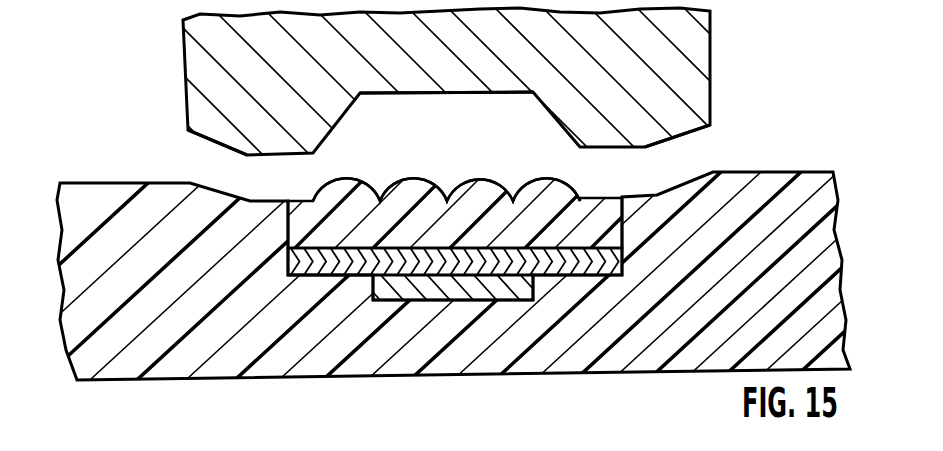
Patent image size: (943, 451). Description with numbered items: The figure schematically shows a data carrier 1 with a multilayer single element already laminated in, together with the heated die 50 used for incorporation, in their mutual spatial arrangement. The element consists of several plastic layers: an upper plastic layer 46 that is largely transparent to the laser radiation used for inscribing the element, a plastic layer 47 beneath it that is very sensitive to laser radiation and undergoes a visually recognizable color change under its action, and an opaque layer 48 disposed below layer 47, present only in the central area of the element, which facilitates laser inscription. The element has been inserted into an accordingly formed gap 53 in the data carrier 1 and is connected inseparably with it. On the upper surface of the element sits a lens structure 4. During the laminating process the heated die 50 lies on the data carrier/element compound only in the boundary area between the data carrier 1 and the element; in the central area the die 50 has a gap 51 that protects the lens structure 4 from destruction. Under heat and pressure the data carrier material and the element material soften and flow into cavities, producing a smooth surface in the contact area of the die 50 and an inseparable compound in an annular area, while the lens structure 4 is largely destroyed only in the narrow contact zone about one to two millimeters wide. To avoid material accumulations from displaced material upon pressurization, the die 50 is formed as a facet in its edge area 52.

The data carrier 1 is at (185, 350).
The lens structure 4 is at (347, 182).
The plastic layer 46 is at (597, 197).
The plastic layer 47 is at (588, 268).
The opaque layer 48 is at (488, 288).
The heated die 50 is at (203, 62).
The gap 51 is at (465, 97).
The facet area 52 is at (213, 141).
The gap 53 is at (370, 280).